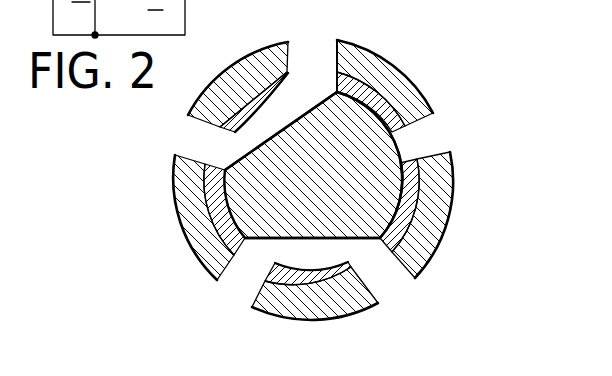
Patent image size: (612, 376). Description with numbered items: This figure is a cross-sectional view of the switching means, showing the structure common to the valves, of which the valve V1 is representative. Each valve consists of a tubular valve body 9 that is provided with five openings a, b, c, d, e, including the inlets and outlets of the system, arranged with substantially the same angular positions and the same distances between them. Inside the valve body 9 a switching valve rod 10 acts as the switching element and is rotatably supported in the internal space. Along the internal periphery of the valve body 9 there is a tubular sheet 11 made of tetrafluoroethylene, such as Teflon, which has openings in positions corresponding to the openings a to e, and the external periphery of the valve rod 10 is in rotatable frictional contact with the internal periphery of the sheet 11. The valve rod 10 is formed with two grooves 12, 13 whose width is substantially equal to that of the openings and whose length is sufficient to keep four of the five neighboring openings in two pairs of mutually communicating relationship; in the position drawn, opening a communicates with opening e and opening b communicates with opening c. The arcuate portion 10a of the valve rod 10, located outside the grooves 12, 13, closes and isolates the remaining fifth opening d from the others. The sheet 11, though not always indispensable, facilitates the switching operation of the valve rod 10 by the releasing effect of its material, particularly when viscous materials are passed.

The tubular valve body 9 is at (244, 56).
The switching valve rod 10 is at (385, 190).
The arcuate portion 10a is at (400, 163).
The tubular sheet 11 is at (330, 282).
The groove 12 is at (279, 130).
The groove 13 is at (323, 267).
The valve V1 is at (511, 31).
The opening a is at (259, 293).
The opening b is at (212, 156).
The opening c is at (318, 70).
The opening d is at (428, 150).
The opening e is at (392, 281).